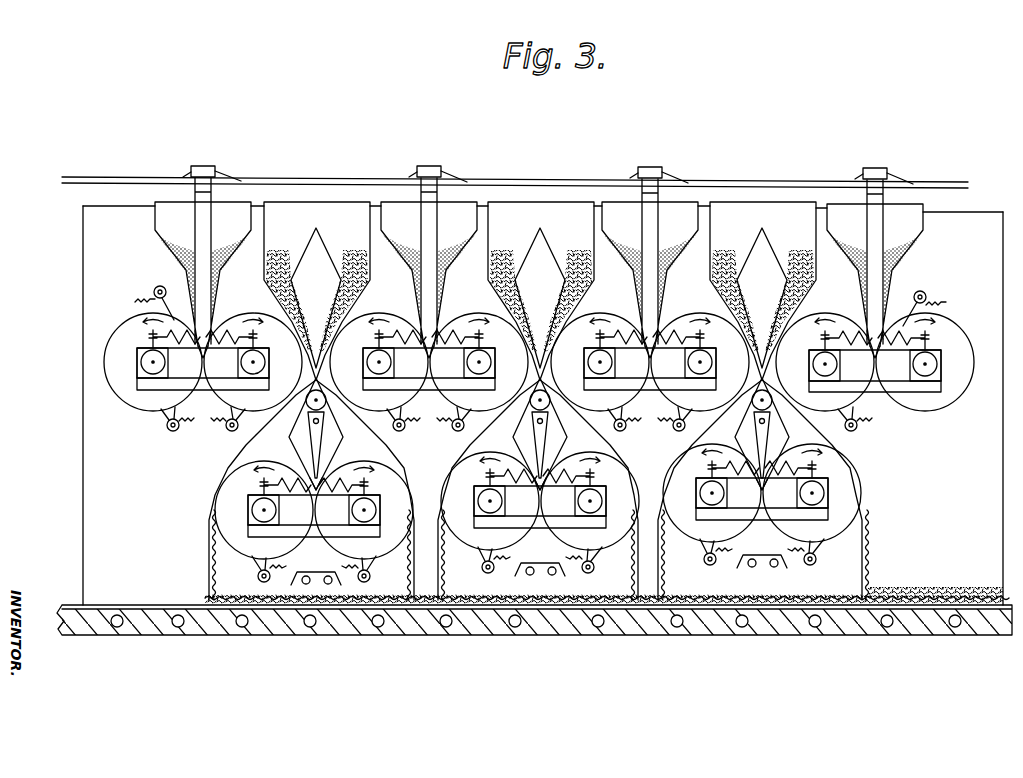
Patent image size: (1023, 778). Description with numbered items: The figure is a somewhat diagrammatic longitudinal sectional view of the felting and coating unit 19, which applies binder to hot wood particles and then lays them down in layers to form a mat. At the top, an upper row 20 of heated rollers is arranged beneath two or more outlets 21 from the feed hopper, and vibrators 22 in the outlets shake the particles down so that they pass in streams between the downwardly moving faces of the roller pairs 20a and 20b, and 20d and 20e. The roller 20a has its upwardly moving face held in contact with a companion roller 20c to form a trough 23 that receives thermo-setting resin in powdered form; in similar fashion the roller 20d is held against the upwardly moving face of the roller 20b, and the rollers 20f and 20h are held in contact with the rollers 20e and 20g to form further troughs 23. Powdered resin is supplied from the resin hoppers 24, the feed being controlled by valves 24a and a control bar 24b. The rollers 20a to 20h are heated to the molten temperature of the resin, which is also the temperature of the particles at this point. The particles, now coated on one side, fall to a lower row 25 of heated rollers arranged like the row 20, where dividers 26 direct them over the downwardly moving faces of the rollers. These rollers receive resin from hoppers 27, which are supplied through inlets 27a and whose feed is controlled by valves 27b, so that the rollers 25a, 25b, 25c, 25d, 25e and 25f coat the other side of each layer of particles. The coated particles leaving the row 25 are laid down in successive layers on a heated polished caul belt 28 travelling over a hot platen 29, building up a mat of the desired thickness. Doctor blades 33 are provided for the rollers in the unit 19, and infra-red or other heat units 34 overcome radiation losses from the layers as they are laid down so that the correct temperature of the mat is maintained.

The felting and coating unit 19 is at (83, 256).
The upper row of heated rollers 20 is at (501, 350).
The roller 20a is at (246, 322).
The roller 20b is at (377, 322).
The companion roller 20c is at (132, 325).
The roller 20d is at (468, 322).
The roller 20e is at (600, 322).
The roller 20f is at (690, 322).
The roller 20g is at (830, 322).
The roller 20h is at (945, 330).
The outlets 21 is at (275, 206).
The vibrators 22 is at (327, 280).
The trough 23 is at (200, 350).
The resin hoppers 24 is at (181, 223).
The valves 24a is at (201, 168).
The control bar 24b is at (117, 178).
The lower row of heated rollers 25 is at (503, 501).
The roller 25a is at (243, 519).
The roller 25b is at (406, 519).
The roller 25c is at (466, 510).
The roller 25d is at (628, 510).
The roller 25e is at (688, 502).
The roller 25f is at (850, 502).
The dividers 26 is at (332, 428).
The hoppers 27 is at (300, 428).
The inlets 27a is at (330, 390).
The valves 27b is at (322, 490).
The caul belt 28 is at (515, 637).
The hot platen 29 is at (608, 630).
The doctor blades 33 is at (158, 288).
The heat units 34 is at (316, 571).